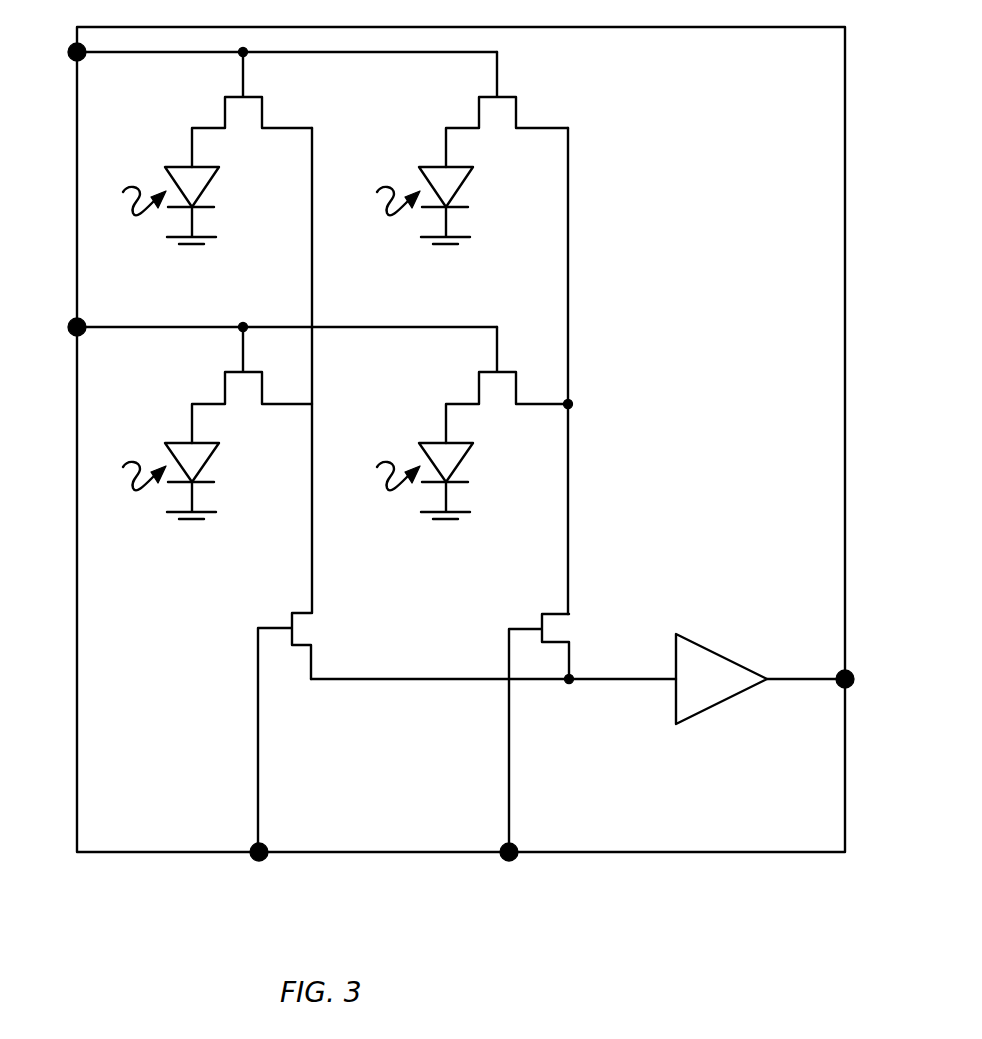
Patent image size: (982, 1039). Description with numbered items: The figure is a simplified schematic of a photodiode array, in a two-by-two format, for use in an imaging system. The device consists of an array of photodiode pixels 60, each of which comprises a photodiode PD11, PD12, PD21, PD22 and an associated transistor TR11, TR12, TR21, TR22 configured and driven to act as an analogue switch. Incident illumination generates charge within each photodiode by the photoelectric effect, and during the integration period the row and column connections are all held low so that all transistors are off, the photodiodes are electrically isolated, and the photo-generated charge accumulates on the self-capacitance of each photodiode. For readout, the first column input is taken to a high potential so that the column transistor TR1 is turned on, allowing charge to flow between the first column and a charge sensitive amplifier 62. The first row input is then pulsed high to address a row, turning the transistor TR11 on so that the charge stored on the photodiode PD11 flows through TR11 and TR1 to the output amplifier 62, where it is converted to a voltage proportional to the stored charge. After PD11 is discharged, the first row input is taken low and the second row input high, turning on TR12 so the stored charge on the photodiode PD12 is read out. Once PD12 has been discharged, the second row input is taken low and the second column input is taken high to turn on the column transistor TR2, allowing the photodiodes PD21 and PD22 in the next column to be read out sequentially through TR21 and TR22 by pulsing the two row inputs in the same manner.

The photodiode pixels 60 is at (464, 457).
The charge sensitive amplifier 62 is at (723, 703).
The transistor TR11 is at (229, 109).
The transistor TR12 is at (230, 385).
The transistor TR21 is at (487, 109).
The transistor TR22 is at (490, 385).
The transistor TR1 is at (305, 732).
The transistor TR2 is at (559, 733).
The photodiode PD11 is at (201, 205).
The photodiode PD12 is at (196, 481).
The photodiode PD21 is at (452, 205).
The photodiode PD22 is at (452, 481).